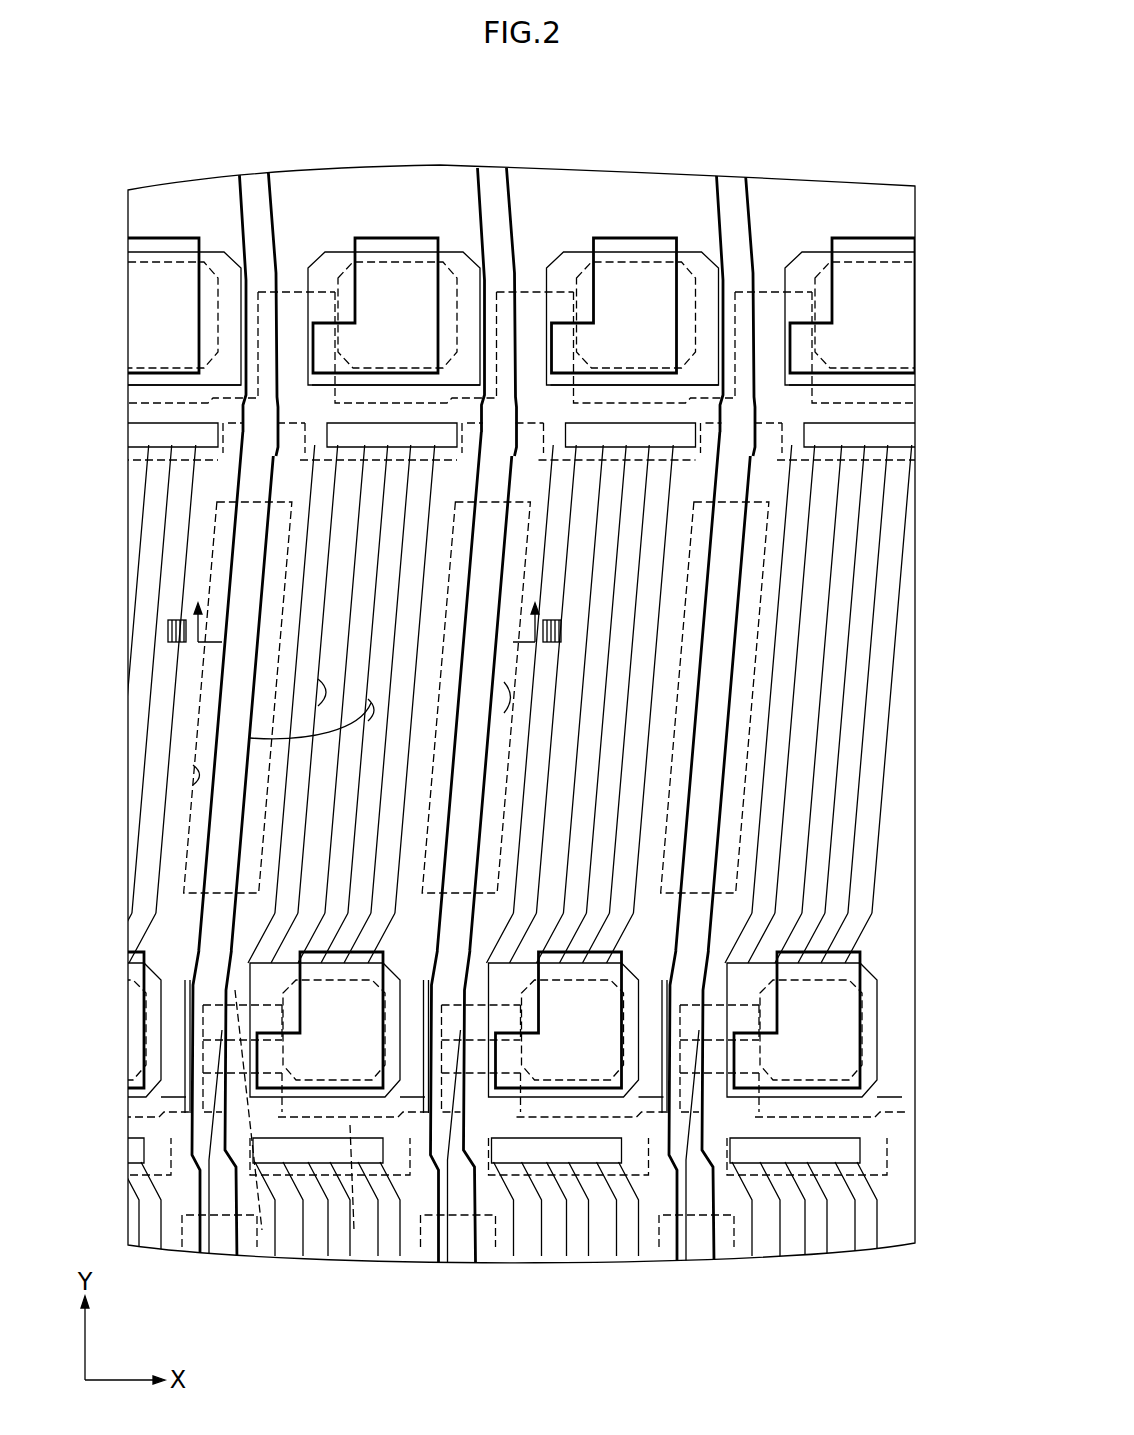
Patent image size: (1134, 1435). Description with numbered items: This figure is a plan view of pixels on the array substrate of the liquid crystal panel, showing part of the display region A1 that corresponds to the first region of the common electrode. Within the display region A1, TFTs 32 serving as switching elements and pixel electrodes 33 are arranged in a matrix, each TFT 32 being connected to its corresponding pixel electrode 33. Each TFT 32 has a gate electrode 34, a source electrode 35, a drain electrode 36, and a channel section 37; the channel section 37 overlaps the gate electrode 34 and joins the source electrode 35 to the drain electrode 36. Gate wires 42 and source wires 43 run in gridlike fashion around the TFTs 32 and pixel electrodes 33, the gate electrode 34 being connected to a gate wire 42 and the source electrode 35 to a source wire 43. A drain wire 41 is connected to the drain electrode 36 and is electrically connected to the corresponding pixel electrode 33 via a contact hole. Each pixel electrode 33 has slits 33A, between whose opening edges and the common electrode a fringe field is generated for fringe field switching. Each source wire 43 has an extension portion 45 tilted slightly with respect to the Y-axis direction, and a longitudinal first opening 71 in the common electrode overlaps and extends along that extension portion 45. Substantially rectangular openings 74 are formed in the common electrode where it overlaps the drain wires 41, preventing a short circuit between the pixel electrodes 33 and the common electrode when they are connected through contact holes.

The TFT 32 is at (293, 268).
The pixel electrode 33 is at (290, 906).
The slit 33A is at (322, 688).
The gate electrode 34 is at (238, 1003).
The source electrode 35 is at (205, 1058).
The drain electrode 36 is at (265, 1063).
The channel section 37 is at (262, 1230).
The drain wire 41 is at (357, 1053).
The gate wire 42 is at (354, 1230).
The source wire 43 is at (263, 438).
The extension portion 45 is at (222, 863).
The first opening 71 is at (515, 706).
The opening 74 is at (408, 1113).
The display region A1 is at (872, 203).